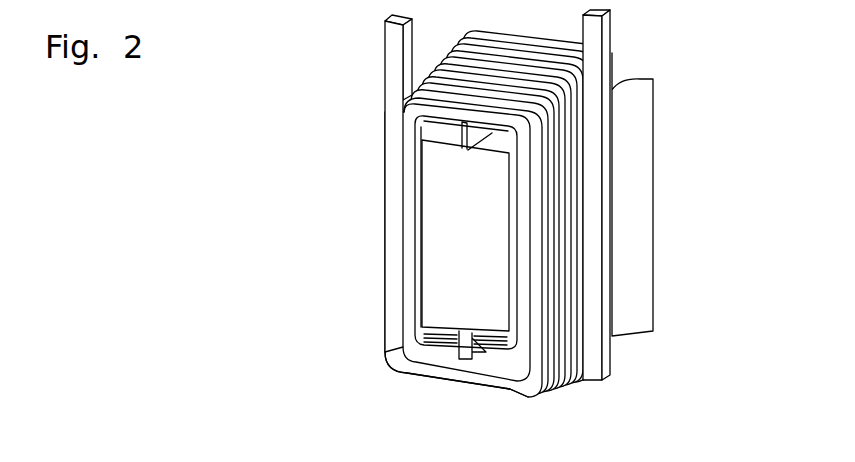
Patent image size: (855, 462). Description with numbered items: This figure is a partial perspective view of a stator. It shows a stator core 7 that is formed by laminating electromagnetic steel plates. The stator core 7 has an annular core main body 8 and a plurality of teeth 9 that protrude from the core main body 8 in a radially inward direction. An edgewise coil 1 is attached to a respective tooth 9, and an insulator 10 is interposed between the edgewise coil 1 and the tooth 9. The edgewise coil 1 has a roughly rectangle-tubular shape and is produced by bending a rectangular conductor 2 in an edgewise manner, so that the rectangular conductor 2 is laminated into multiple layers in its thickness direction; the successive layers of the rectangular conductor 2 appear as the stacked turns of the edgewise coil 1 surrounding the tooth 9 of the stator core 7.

The edgewise coil 1 is at (397, 138).
The rectangular conductor 2 is at (386, 222).
The stator core 7 is at (748, 126).
The core main body 8 is at (645, 141).
The tooth 9 is at (473, 284).
The insulator 10 is at (466, 360).